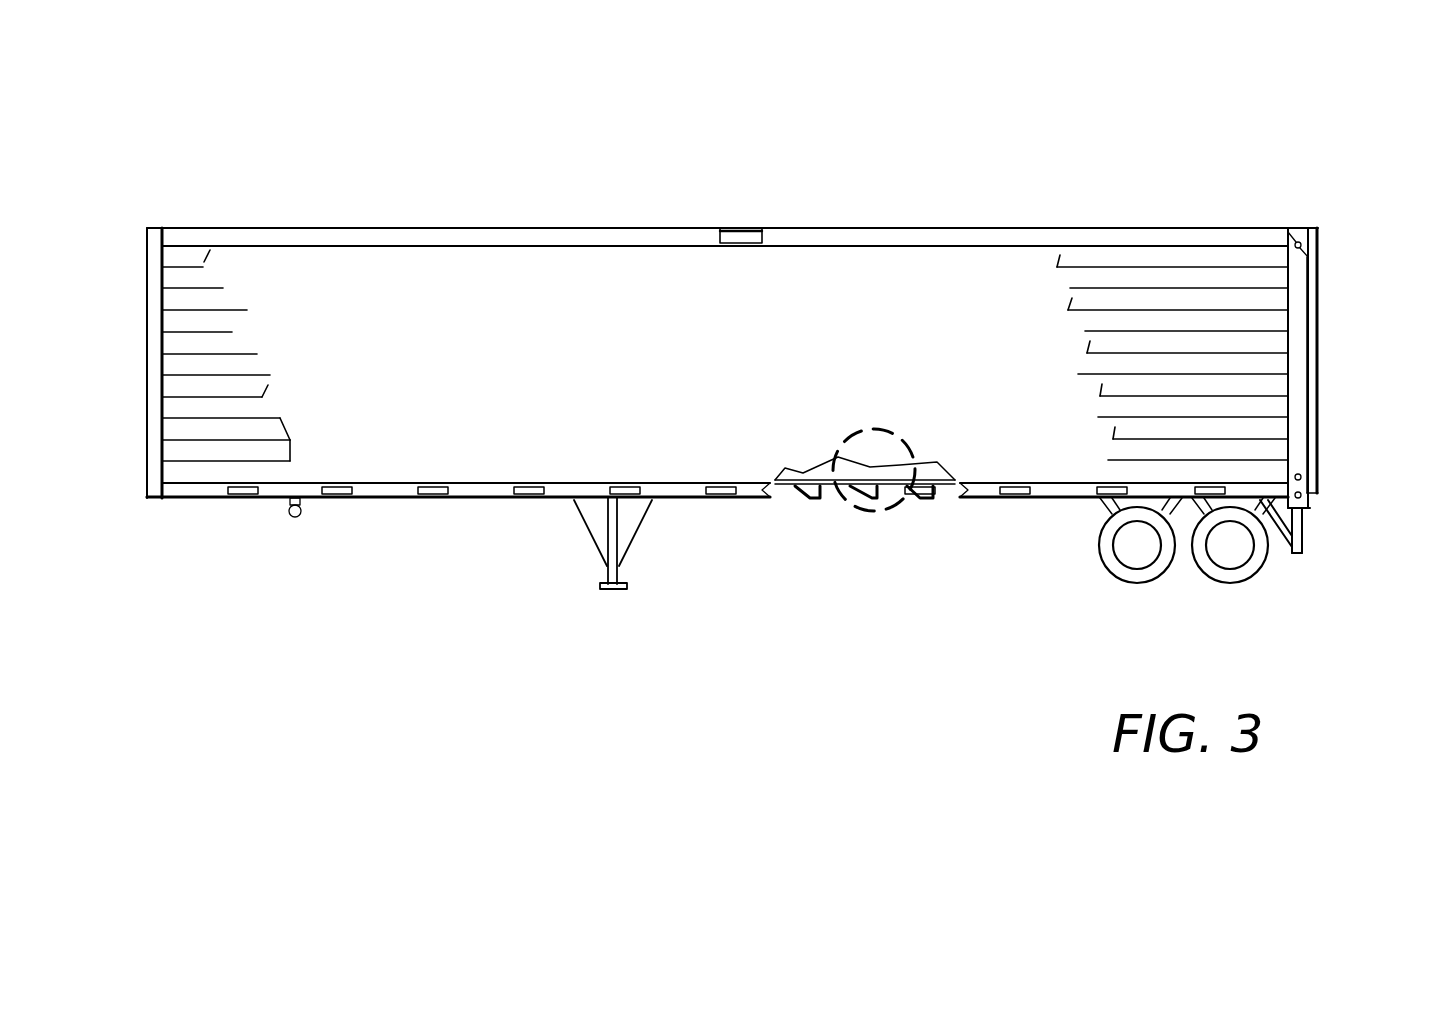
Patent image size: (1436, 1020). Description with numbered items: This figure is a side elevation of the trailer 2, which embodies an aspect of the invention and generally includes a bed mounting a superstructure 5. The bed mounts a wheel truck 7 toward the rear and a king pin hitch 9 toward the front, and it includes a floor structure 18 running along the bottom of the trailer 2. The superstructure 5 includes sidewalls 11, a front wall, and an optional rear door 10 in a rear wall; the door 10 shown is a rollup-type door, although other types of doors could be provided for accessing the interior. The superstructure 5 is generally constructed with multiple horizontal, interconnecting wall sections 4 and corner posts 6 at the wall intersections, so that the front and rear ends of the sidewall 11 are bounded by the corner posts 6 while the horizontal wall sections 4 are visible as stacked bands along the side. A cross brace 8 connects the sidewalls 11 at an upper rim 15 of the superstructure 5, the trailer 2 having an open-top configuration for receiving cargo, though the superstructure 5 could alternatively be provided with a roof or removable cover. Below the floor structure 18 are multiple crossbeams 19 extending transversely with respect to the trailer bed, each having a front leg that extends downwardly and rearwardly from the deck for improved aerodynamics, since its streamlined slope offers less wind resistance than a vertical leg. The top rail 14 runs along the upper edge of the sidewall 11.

The trailer 2 is at (190, 150).
The wall sections 4 is at (1148, 283).
The superstructure 5 is at (1340, 222).
The corner posts 6 is at (147, 340).
The wheel truck 7 is at (1080, 535).
The cross brace 8 is at (740, 228).
The king pin hitch 9 is at (288, 508).
The rear door 10 is at (1320, 384).
The sidewalls 11 is at (712, 381).
The top rail 14 is at (508, 228).
The upper rim 15 is at (637, 228).
The floor structure 18 is at (831, 486).
The crossbeams 19 is at (936, 528).